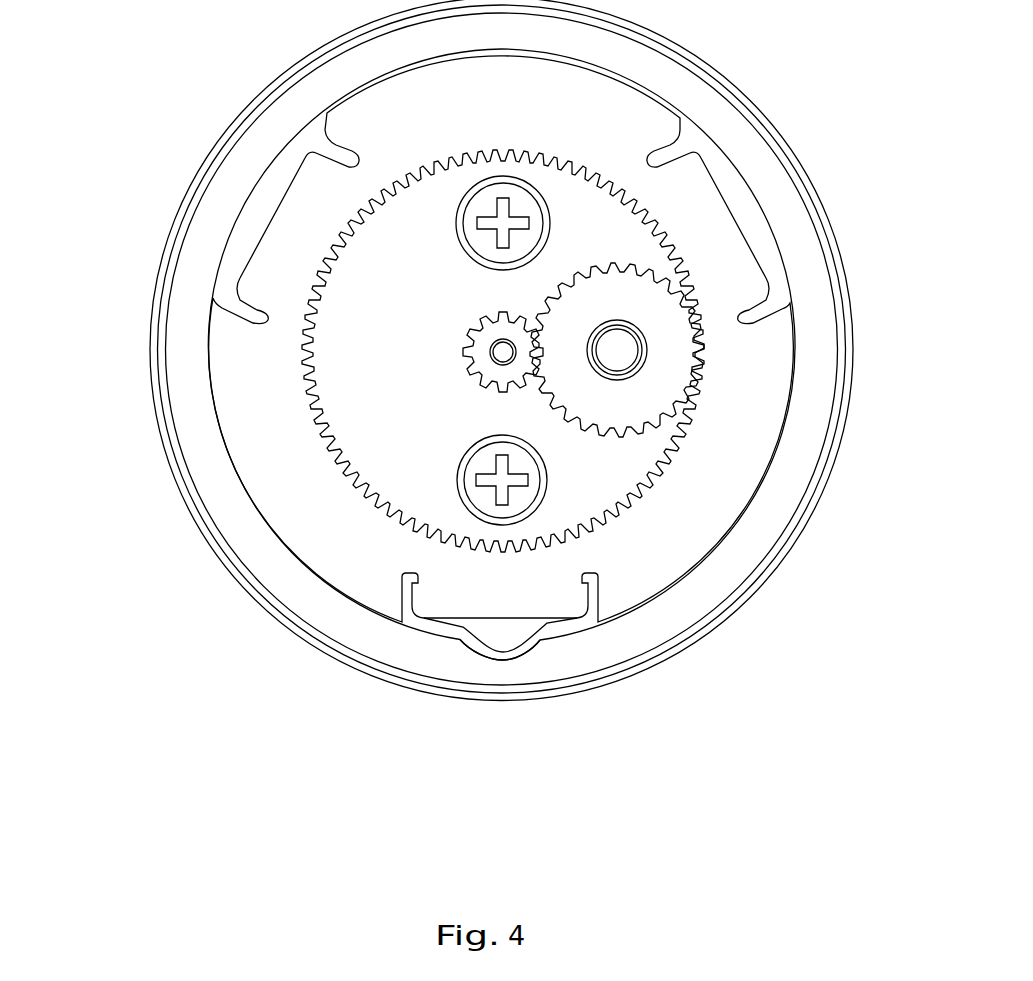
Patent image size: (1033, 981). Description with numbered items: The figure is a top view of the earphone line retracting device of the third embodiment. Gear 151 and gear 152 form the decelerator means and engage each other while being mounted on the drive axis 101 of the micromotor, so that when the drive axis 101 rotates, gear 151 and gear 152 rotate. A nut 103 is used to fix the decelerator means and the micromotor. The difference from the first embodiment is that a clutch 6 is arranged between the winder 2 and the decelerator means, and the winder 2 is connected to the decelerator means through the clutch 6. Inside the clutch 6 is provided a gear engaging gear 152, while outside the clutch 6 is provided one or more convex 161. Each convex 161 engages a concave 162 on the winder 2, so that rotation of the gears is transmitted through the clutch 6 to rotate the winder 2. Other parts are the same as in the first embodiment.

The winder 2 is at (205, 228).
The clutch 6 is at (555, 404).
The drive axis 101 is at (497, 352).
The nut 103 is at (463, 451).
The gear 151 is at (490, 386).
The gear 152 is at (652, 371).
The convex 161 is at (533, 640).
The concave 162 is at (506, 660).